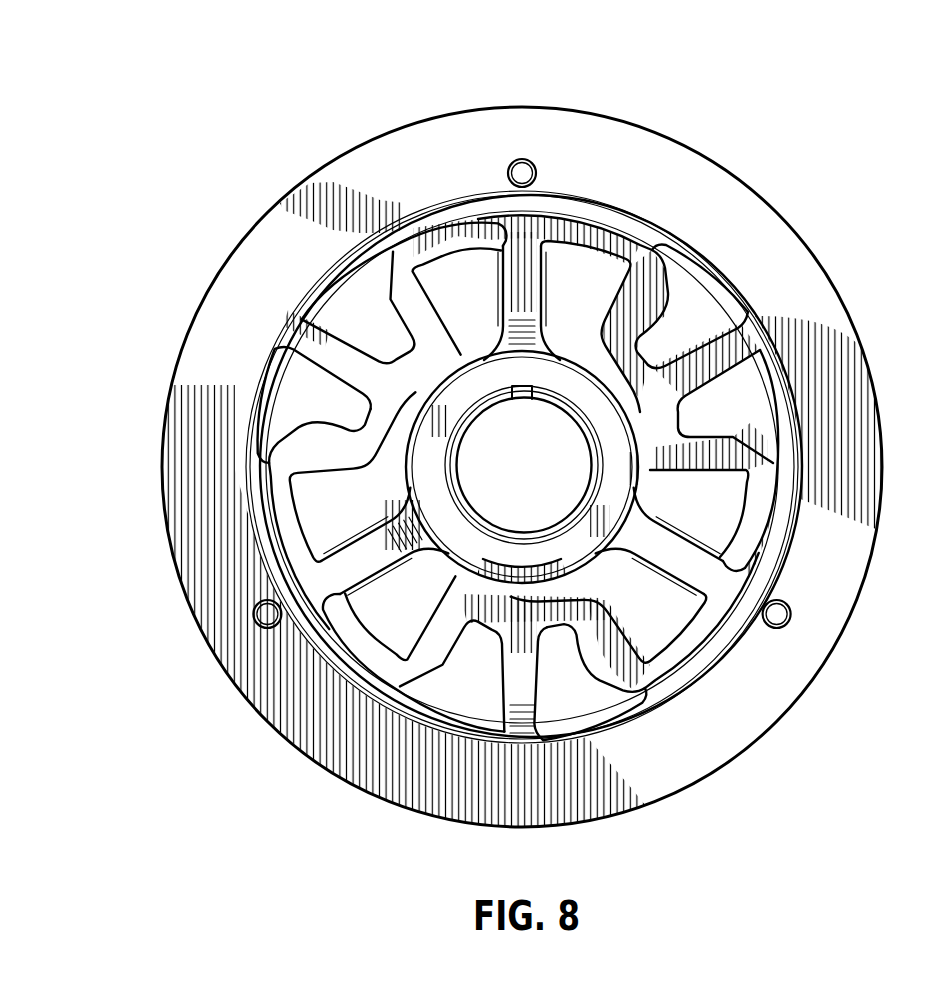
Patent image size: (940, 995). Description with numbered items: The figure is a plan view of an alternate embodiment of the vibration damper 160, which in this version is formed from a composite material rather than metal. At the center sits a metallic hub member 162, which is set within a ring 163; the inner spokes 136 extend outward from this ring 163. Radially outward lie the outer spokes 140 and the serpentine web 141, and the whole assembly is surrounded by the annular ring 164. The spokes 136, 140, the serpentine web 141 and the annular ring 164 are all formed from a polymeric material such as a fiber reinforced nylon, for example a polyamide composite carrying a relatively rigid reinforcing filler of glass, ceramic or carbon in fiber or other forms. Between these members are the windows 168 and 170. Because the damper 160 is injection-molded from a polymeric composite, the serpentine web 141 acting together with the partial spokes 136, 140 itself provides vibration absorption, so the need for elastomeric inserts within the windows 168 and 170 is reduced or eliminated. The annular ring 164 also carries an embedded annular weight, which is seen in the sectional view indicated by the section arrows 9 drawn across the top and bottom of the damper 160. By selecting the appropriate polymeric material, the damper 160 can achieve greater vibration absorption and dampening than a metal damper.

The vibration damper 160 is at (788, 158).
The hub member 162 is at (570, 412).
The ring 163 is at (643, 467).
The annular ring 164 is at (803, 261).
The windows 168 is at (592, 298).
The windows 170 is at (753, 392).
The inner spokes 136 is at (511, 275).
The outer spokes 140 is at (724, 344).
The serpentine web 141 is at (372, 292).
The section line for FIG. 9 is at (522, 57).